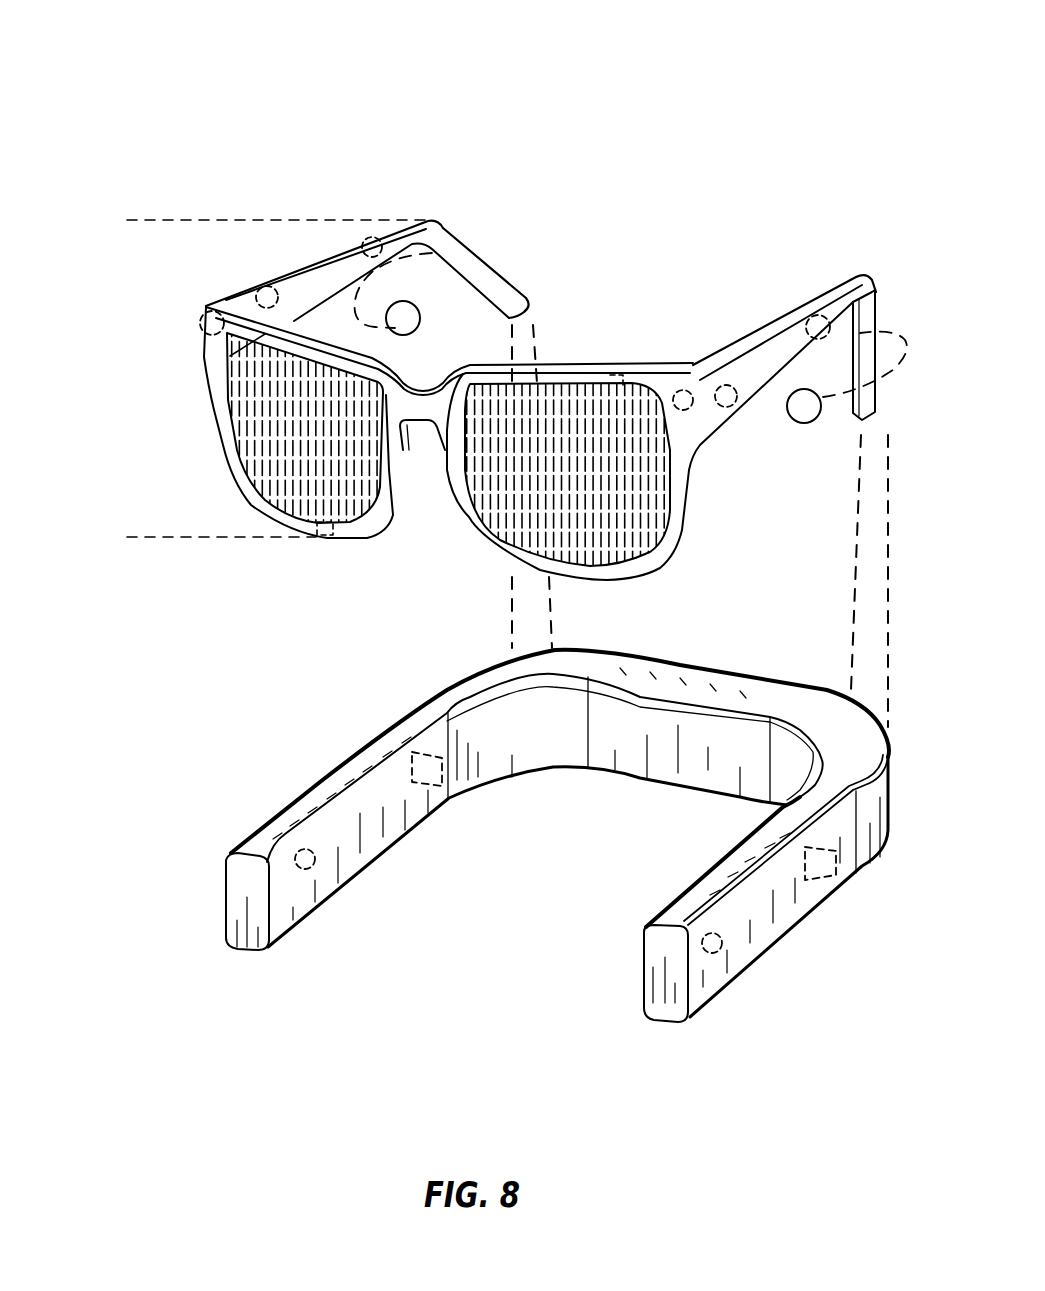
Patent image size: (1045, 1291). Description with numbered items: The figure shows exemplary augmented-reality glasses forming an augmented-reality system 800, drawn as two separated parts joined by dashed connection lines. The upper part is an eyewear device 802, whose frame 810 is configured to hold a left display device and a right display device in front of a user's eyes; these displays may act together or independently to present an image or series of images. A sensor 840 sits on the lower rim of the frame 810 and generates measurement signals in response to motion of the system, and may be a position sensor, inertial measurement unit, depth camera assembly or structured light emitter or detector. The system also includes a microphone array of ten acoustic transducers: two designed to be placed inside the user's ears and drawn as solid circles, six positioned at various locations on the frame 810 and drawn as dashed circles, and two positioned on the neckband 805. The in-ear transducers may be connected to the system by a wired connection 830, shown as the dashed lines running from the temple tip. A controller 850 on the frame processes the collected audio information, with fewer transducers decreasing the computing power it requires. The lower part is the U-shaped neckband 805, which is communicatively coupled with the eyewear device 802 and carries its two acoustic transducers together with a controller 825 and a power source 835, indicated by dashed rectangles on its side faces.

The augmented-reality system 800 is at (131, 120).
The eyewear device 802 is at (127, 220).
The neckband 805 is at (223, 955).
The frame 810 is at (422, 231).
The controller 825 is at (822, 868).
The wired connection 830 is at (889, 586).
The power source 835 is at (432, 776).
The sensor 840 is at (314, 534).
The controller 850 is at (615, 378).